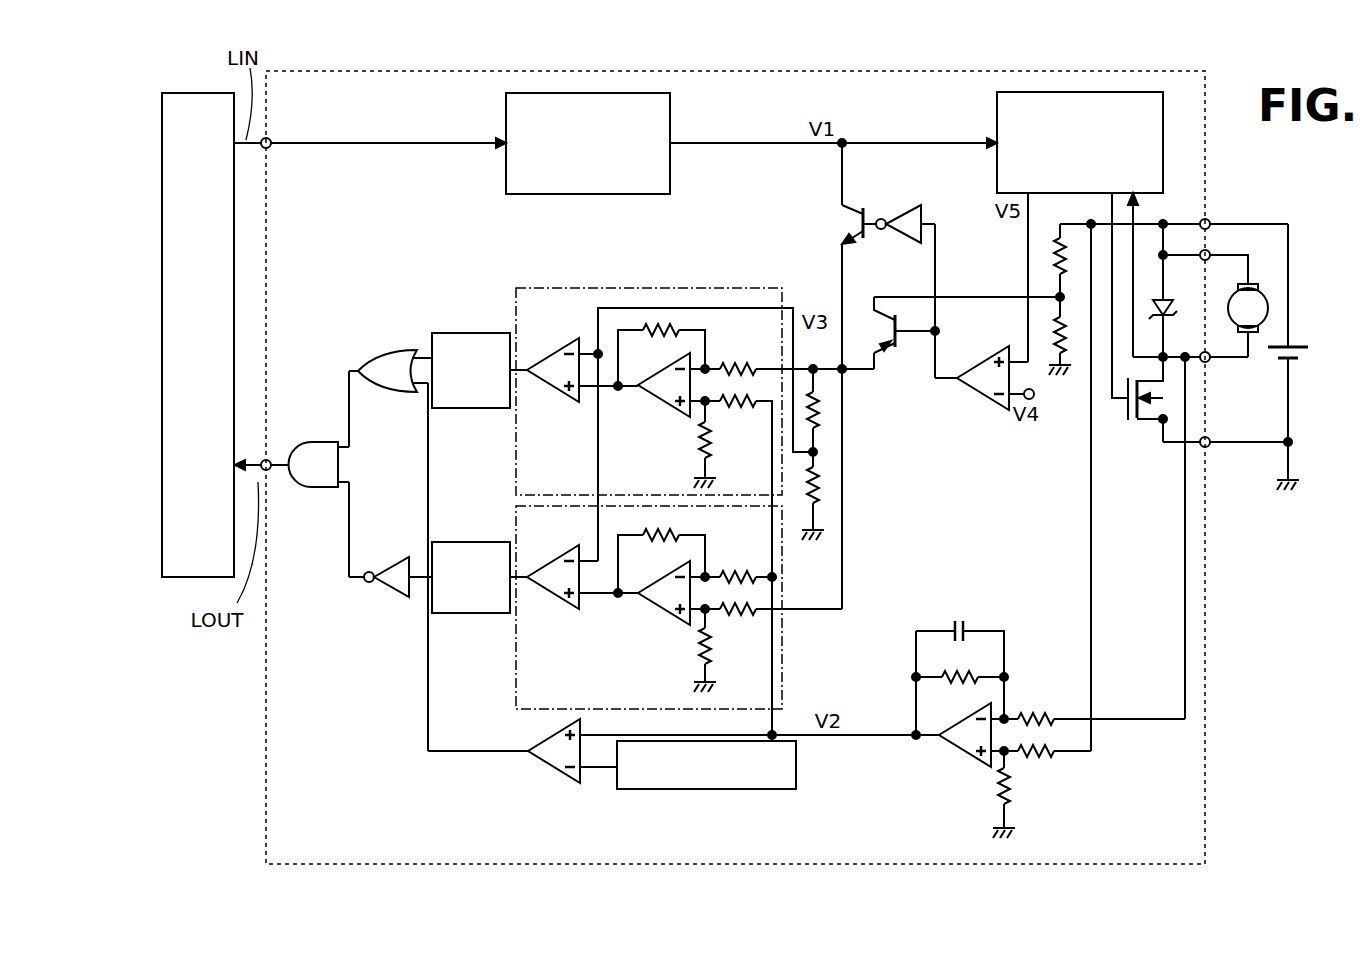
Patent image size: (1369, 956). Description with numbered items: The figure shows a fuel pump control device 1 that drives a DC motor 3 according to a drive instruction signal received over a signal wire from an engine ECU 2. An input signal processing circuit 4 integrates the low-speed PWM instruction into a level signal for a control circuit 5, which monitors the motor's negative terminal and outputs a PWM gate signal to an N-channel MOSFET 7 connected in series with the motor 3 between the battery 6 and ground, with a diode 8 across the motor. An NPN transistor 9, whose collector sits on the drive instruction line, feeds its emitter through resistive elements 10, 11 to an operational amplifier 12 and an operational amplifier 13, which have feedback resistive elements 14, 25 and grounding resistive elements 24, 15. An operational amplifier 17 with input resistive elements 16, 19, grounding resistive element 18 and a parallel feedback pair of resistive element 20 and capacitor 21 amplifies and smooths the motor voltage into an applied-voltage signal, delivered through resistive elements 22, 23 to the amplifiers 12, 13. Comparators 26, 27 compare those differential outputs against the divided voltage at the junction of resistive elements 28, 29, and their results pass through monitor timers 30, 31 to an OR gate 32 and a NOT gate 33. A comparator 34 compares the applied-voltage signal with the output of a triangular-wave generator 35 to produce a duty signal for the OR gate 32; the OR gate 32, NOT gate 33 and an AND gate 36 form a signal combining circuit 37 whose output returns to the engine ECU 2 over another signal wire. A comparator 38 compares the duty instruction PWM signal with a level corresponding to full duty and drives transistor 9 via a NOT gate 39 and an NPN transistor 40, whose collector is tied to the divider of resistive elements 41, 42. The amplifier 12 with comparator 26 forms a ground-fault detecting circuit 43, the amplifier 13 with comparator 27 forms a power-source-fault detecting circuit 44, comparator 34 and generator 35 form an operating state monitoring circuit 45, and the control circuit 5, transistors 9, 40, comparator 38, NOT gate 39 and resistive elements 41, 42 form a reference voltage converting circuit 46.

The fuel pump control device 1 is at (690, 72).
The engine ECU 2 is at (184, 93).
The DC motor 3 is at (1266, 312).
The input signal processing circuit 4 is at (670, 120).
The control circuit 5 is at (997, 120).
The battery 6 is at (1300, 345).
The N-channel MOSFET 7 is at (1133, 428).
The diode 8 is at (1176, 305).
The NPN transistor 9 is at (866, 207).
The resistive element 10 is at (740, 360).
The resistive element 11 is at (740, 618).
The operational amplifier 12 is at (668, 402).
The operational amplifier 13 is at (668, 610).
The resistive element 14 is at (660, 336).
The resistive element 15 is at (700, 650).
The resistive element 16 is at (1044, 757).
The operational amplifier 17 is at (962, 760).
The resistive element 18 is at (1012, 790).
The resistive element 19 is at (1040, 710).
The resistive element 20 is at (962, 672).
The capacitor 21 is at (958, 620).
The resistive element 22 is at (740, 410).
The resistive element 23 is at (742, 568).
The resistive element 24 is at (698, 452).
The resistive element 25 is at (670, 530).
The comparator 26 is at (555, 345).
The comparator 27 is at (552, 600).
The resistive element 28 is at (822, 410).
The resistive element 29 is at (822, 486).
The monitor timer 30 is at (466, 333).
The monitor timer 31 is at (470, 613).
The OR gate 32 is at (375, 352).
The NOT gate 33 is at (398, 600).
The comparator 34 is at (550, 775).
The triangular-wave generator 35 is at (698, 790).
The AND gate 36 is at (316, 490).
The signal combining circuit 37 is at (330, 425).
The comparator 38 is at (985, 402).
The NOT gate 39 is at (912, 205).
The NPN transistor 40 is at (888, 347).
The resistive element 41 is at (1054, 252).
The resistive element 42 is at (1068, 362).
The ground-fault detecting circuit 43 is at (520, 288).
The power-source-fault detecting circuit 44 is at (516, 705).
The operating state monitoring circuit 45 is at (597, 795).
The reference voltage converting circuit 46 is at (812, 226).